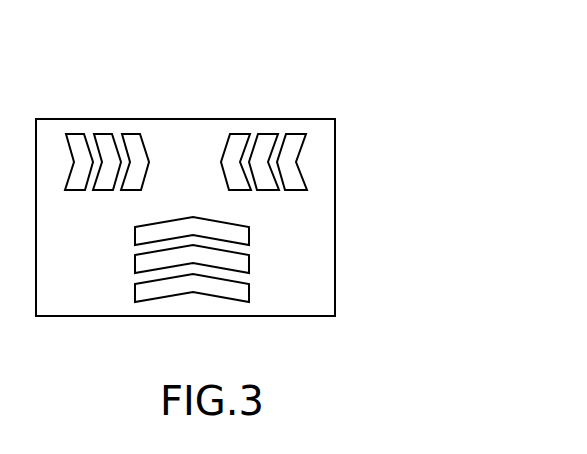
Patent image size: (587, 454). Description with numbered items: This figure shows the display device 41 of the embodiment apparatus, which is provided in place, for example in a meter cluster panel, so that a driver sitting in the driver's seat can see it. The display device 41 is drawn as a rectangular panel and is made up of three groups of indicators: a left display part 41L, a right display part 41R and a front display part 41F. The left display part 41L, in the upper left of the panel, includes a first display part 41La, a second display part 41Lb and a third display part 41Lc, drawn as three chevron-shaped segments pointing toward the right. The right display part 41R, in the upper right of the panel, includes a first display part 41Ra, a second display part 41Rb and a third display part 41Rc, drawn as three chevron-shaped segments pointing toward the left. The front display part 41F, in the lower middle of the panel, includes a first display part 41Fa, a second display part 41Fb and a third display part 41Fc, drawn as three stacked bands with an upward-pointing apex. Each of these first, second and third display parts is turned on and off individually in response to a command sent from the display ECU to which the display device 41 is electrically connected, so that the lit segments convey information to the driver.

The display device 41 is at (70, 316).
The left display part 41L is at (180, 48).
The right display part 41R is at (342, 49).
The first display part 41La is at (68, 132).
The second display part 41Lb is at (103, 132).
The third display part 41Lc is at (134, 132).
The first display part 41Ra is at (299, 132).
The second display part 41Rb is at (267, 132).
The third display part 41Rc is at (233, 132).
The front display part 41F is at (433, 218).
The first display part 41Fa is at (249, 294).
The second display part 41Fb is at (249, 263).
The third display part 41Fc is at (249, 233).